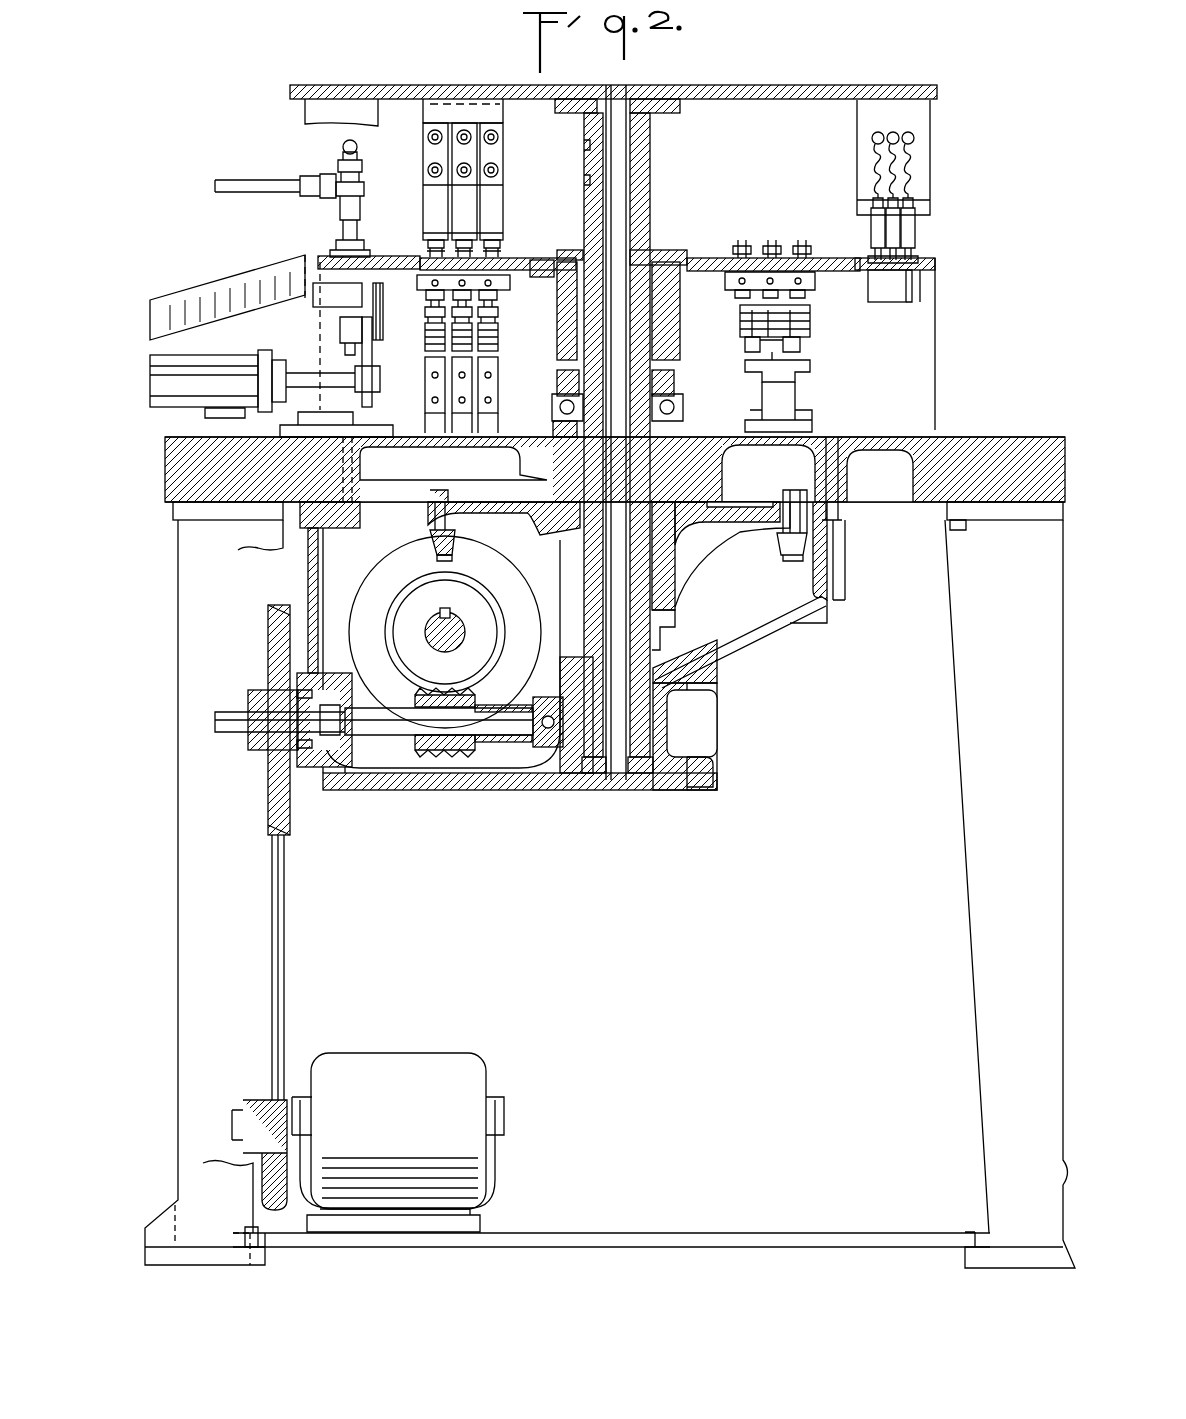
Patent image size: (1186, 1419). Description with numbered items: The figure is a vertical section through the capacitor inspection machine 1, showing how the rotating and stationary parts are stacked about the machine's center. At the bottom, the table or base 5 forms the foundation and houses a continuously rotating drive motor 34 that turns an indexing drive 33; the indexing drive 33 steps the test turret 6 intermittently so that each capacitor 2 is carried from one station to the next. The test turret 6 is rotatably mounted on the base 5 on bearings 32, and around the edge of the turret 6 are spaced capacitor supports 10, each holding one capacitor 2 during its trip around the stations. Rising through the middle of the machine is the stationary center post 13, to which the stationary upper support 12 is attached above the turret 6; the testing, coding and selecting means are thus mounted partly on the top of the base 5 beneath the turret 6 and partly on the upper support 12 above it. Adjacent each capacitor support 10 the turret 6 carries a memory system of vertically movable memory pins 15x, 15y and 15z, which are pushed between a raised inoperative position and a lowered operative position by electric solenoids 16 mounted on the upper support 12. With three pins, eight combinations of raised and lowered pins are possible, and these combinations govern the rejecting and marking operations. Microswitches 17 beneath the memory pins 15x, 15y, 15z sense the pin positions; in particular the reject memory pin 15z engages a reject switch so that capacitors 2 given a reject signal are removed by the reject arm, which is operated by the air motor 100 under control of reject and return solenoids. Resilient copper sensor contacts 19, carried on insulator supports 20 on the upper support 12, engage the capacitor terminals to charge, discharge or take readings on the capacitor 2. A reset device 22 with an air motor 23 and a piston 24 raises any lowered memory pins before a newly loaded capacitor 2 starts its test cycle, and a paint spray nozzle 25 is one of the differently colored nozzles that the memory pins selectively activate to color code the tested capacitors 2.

The capacitor inspection machine 1 is at (778, 66).
The capacitor 2 is at (895, 296).
The table or base 5 is at (1008, 610).
The test turret 6 is at (690, 258).
The capacitor support 10 is at (920, 254).
The stationary upper support 12 is at (903, 97).
The stationary center post 13 is at (635, 218).
The memory pin 15x is at (741, 244).
The memory pin 15y is at (771, 244).
The reject memory pin 15z is at (803, 244).
The electric solenoid 16 is at (438, 200).
The microswitch 17 is at (465, 342).
The sensor contact 19 is at (885, 230).
The insulator support 20 is at (915, 118).
The reset device 22 is at (812, 404).
The air motor 23 is at (800, 366).
The piston 24 is at (800, 320).
The paint spray nozzle 25 is at (362, 218).
The bearing 32 is at (660, 402).
The indexing drive 33 is at (492, 802).
The drive motor 34 is at (410, 1133).
The air motor 100 is at (240, 372).